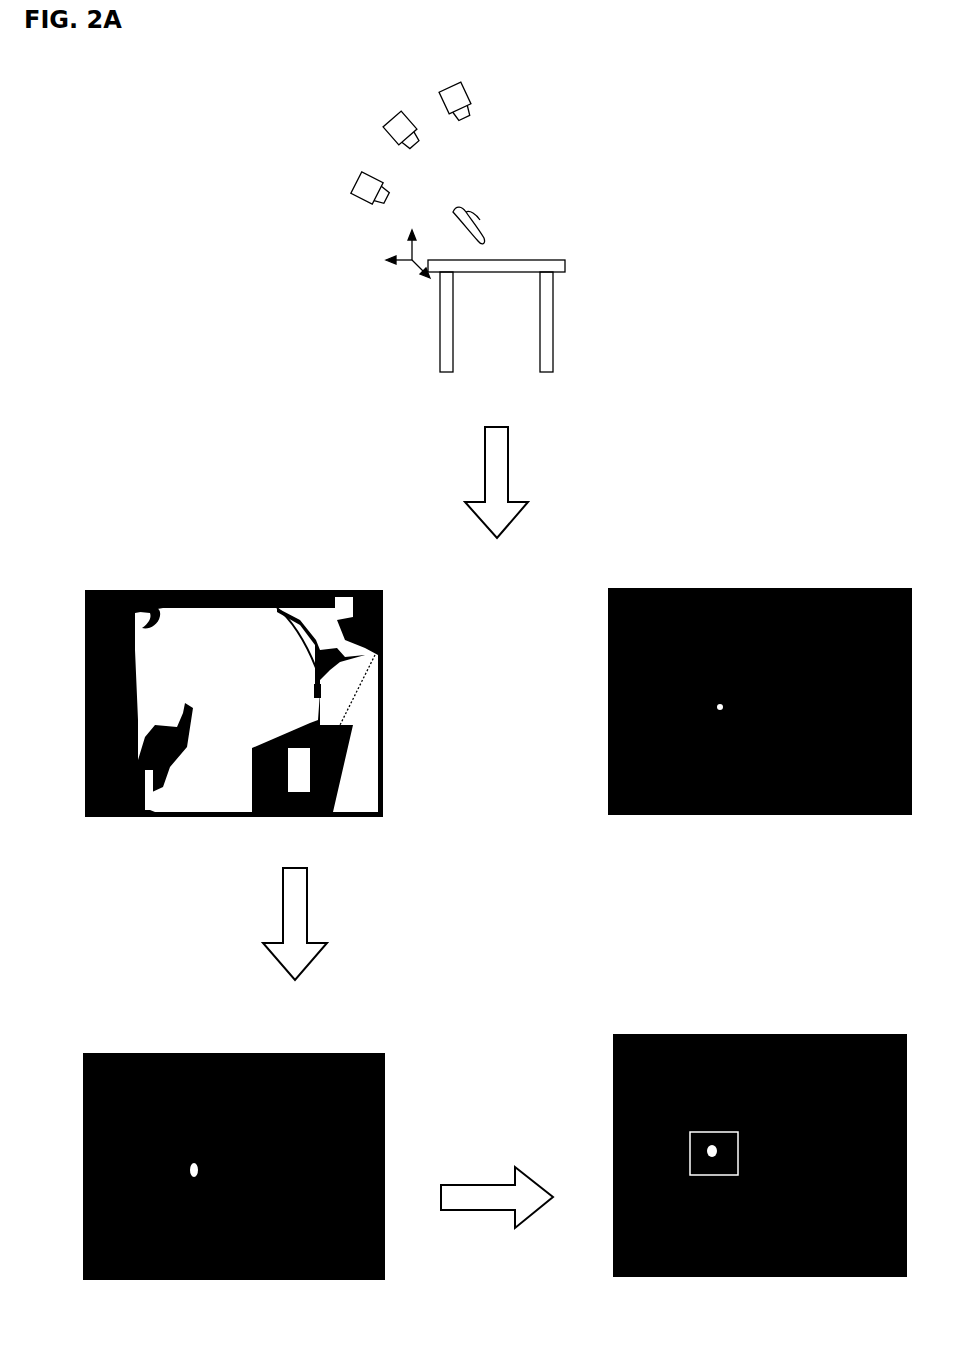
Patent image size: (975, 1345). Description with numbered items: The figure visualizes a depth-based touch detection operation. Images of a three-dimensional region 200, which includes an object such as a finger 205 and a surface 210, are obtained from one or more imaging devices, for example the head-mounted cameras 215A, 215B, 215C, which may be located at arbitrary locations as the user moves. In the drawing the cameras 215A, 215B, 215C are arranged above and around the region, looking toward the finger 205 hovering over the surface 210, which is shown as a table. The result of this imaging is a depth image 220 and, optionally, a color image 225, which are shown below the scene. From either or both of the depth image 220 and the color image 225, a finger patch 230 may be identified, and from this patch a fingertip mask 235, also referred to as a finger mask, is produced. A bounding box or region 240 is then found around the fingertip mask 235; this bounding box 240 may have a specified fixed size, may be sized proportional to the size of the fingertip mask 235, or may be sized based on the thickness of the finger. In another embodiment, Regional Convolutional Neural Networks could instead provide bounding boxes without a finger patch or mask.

The three-dimensional region 200 is at (570, 120).
The finger 205 is at (480, 223).
The surface 210 is at (557, 260).
The head-mounted camera 215A is at (441, 93).
The head-mounted camera 215B is at (385, 124).
The head-mounted camera 215C is at (349, 189).
The depth image 220 is at (130, 590).
The color image 225 is at (662, 588).
The finger patch 230 is at (200, 1158).
The fingertip mask 235 is at (716, 1147).
The bounding box 240 is at (738, 1150).